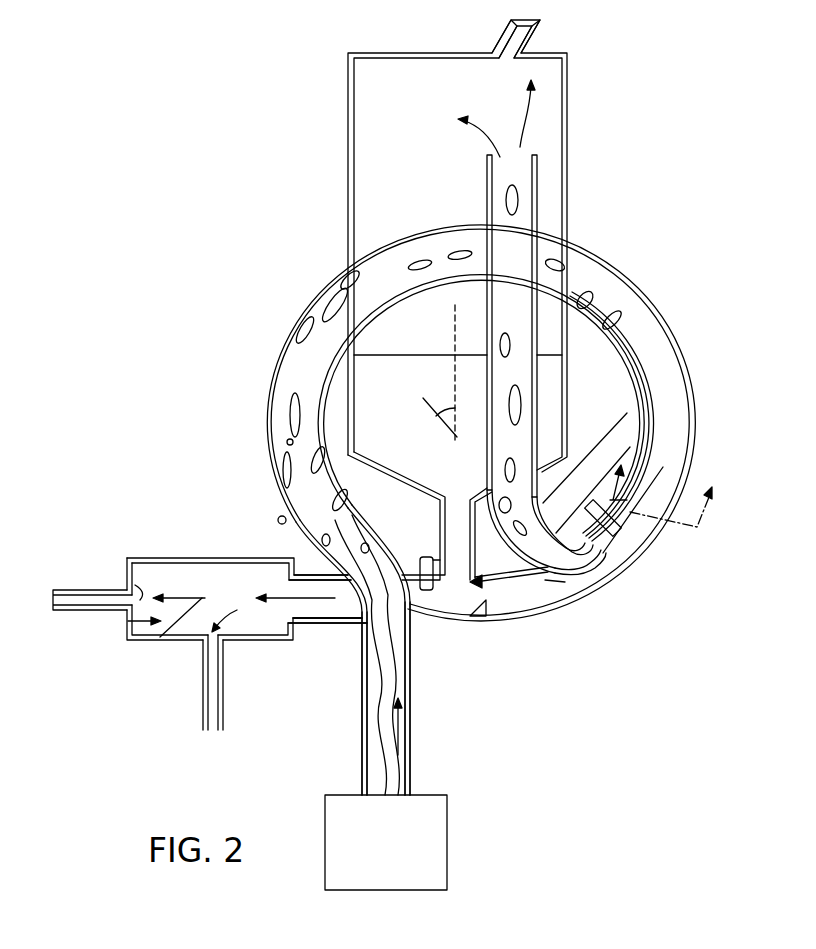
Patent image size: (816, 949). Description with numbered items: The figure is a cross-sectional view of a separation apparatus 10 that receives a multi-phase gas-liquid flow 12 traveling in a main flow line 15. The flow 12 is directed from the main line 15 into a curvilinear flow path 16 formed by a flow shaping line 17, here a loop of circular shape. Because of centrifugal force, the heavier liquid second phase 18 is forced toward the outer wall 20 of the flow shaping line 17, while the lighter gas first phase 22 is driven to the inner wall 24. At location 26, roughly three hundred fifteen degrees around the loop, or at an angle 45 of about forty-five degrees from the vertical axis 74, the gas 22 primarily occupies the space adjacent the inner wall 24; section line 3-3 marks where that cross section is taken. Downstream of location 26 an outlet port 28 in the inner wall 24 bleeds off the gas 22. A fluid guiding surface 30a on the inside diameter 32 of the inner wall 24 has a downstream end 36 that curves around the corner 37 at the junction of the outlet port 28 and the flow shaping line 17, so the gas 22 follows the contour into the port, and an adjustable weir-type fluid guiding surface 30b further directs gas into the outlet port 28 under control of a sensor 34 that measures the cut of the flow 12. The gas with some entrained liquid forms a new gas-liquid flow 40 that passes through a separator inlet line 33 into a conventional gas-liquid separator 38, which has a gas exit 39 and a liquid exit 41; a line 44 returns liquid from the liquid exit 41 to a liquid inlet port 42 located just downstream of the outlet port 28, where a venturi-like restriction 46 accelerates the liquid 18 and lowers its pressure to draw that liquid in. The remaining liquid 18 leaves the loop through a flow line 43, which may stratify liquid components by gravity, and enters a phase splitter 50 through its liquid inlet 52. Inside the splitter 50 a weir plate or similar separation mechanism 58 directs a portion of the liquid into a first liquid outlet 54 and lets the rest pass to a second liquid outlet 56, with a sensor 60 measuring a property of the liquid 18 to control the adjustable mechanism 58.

The separation apparatus 10 is at (150, 162).
The multi-phase flow 12 is at (378, 752).
The main flow line 15 is at (360, 714).
The curvilinear flow path 16 is at (303, 322).
The flow shaping line 17 is at (578, 256).
The second phase (liquid) 18 is at (602, 292).
The outer wall 20 is at (648, 385).
The first phase (gas) 22 is at (632, 347).
The inner wall 24 is at (636, 408).
The location 26 is at (660, 478).
The outlet port 28 is at (548, 560).
The fluid guiding surface 30a is at (598, 562).
The fluid guiding surface 30b is at (566, 585).
The inside diameter 32 is at (608, 548).
The separator inlet line 33 is at (633, 445).
The sensor 34 is at (618, 530).
The downstream end 36 is at (545, 568).
The corner 37 is at (570, 575).
The gas-liquid separator 38 is at (570, 126).
The gas exit 39 is at (505, 40).
The new gas-liquid flow 40 is at (640, 466).
The liquid exit 41 is at (460, 497).
The liquid inlet port 42 is at (467, 580).
The flow line 43 is at (347, 622).
The line 44 is at (438, 553).
The angle 45 degrees 45 is at (452, 408).
The restriction 46 is at (487, 604).
The phase splitter 50 is at (105, 528).
The liquid inlet 52 is at (293, 588).
The first liquid outlet 54 is at (205, 660).
The second liquid outlet 56 is at (135, 586).
The separation mechanism 58 is at (128, 621).
The sensor 60 is at (420, 556).
The vertical axis 74 is at (452, 338).
The cross section line 3- 3 is at (684, 488).